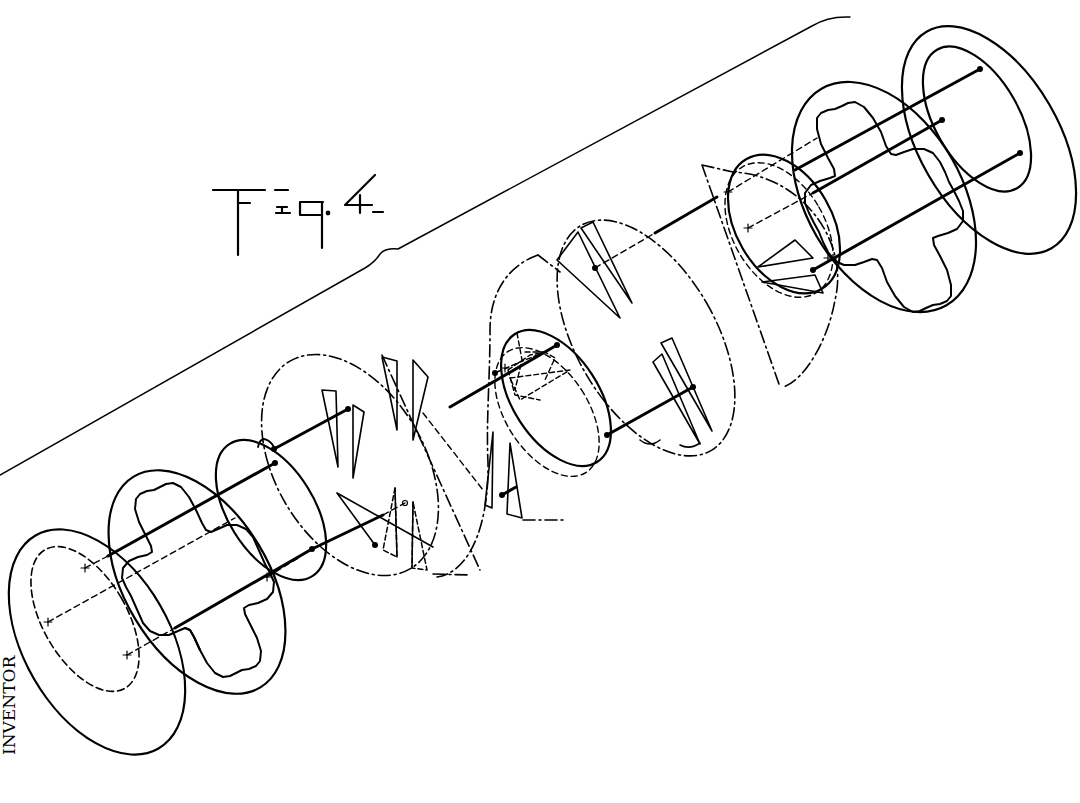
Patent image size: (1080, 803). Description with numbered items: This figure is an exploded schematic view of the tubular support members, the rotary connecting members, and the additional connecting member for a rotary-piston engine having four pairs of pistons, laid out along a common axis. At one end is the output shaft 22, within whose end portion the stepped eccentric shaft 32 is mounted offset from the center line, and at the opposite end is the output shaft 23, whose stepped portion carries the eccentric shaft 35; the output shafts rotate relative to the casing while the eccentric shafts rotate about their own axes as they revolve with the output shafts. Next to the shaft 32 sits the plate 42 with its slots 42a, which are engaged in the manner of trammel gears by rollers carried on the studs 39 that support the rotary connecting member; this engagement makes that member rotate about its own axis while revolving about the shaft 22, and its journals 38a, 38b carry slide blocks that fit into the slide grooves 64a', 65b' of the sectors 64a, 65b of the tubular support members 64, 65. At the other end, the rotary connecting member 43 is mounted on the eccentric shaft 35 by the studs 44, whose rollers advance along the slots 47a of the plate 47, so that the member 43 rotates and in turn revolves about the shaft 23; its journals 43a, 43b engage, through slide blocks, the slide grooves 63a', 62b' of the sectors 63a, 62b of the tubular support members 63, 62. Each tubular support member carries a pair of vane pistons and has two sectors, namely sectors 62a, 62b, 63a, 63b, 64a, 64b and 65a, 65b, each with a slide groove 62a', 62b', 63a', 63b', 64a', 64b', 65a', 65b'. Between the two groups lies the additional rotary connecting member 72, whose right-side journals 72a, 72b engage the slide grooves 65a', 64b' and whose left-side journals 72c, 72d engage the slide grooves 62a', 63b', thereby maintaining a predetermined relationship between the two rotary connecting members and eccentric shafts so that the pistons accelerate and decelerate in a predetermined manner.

The output shaft 22 is at (1050, 237).
The output shaft 23 is at (173, 717).
The eccentric shaft 32 is at (997, 92).
The eccentric shaft 35 is at (53, 550).
The journal 38a is at (828, 296).
The journal 38b is at (680, 225).
The studs 39 is at (797, 160).
The plate 42 is at (957, 283).
The slots 42a is at (893, 300).
The rotary connecting member 43 is at (298, 580).
The journal 43a is at (353, 540).
The journal 43b is at (263, 445).
The studs 44 is at (123, 503).
The plate 47 is at (257, 687).
The slots 47a is at (257, 630).
The tubular support member 62 is at (300, 385).
The sector 62a is at (532, 498).
The slide groove 62a' is at (499, 509).
The sector 62b is at (309, 428).
The slide groove 62b' is at (348, 422).
The tubular support member 63 is at (455, 576).
The sector 63a is at (374, 548).
The slide groove 63a' is at (414, 560).
The sector 63b is at (376, 372).
The slide groove 63b' is at (425, 378).
The tubular support member 64 is at (537, 255).
The sector 64a is at (783, 246).
The slide groove 64a' is at (791, 302).
The sector 64b is at (525, 342).
The slide groove 64b' is at (548, 386).
The tubular support member 65 is at (687, 445).
The sector 65a is at (719, 384).
The slide groove 65a' is at (710, 407).
The sector 65b is at (606, 242).
The slide groove 65b' is at (576, 258).
The additional rotary connecting member 72 is at (607, 463).
The journal 72a is at (648, 425).
The journal 72b is at (490, 360).
The journal 72c is at (570, 509).
The journal 72d is at (470, 378).